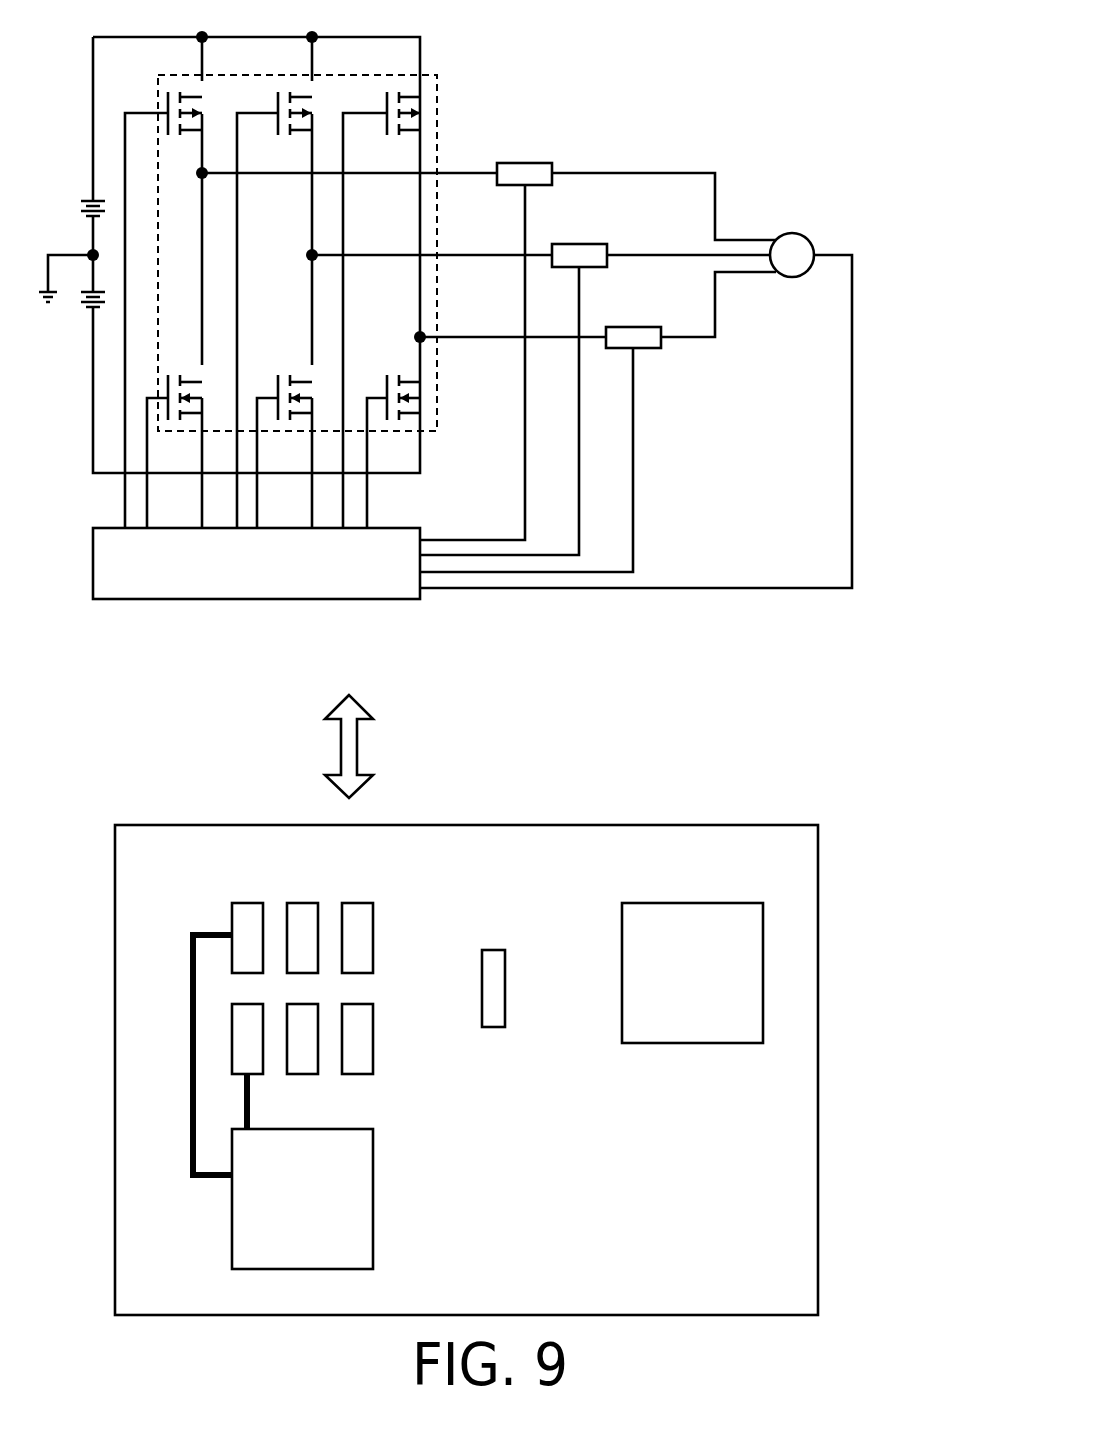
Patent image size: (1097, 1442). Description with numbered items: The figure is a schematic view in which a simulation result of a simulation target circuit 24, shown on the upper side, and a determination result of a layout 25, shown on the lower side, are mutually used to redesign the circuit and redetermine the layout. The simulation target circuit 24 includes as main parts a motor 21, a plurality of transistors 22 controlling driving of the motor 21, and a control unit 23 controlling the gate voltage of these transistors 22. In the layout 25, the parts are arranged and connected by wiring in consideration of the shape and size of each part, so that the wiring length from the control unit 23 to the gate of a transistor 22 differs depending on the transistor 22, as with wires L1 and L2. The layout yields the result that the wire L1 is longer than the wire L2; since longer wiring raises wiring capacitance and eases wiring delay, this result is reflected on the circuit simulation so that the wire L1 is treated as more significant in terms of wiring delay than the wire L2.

The motor 21 is at (792, 278).
The transistors 22 is at (437, 132).
The control unit 23 is at (369, 575).
The simulation target circuit 24 is at (492, 355).
The layout 25 is at (508, 1070).
The wire L1 is at (191, 1040).
The wire L2 is at (250, 1104).